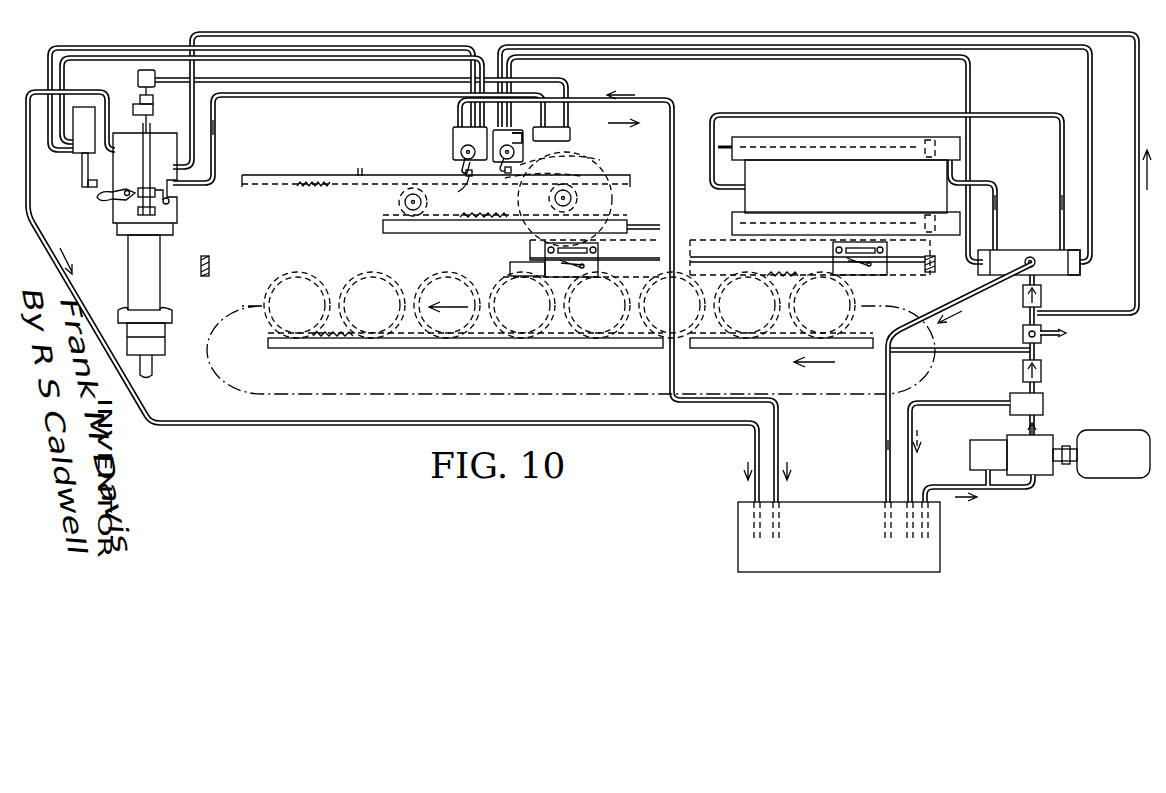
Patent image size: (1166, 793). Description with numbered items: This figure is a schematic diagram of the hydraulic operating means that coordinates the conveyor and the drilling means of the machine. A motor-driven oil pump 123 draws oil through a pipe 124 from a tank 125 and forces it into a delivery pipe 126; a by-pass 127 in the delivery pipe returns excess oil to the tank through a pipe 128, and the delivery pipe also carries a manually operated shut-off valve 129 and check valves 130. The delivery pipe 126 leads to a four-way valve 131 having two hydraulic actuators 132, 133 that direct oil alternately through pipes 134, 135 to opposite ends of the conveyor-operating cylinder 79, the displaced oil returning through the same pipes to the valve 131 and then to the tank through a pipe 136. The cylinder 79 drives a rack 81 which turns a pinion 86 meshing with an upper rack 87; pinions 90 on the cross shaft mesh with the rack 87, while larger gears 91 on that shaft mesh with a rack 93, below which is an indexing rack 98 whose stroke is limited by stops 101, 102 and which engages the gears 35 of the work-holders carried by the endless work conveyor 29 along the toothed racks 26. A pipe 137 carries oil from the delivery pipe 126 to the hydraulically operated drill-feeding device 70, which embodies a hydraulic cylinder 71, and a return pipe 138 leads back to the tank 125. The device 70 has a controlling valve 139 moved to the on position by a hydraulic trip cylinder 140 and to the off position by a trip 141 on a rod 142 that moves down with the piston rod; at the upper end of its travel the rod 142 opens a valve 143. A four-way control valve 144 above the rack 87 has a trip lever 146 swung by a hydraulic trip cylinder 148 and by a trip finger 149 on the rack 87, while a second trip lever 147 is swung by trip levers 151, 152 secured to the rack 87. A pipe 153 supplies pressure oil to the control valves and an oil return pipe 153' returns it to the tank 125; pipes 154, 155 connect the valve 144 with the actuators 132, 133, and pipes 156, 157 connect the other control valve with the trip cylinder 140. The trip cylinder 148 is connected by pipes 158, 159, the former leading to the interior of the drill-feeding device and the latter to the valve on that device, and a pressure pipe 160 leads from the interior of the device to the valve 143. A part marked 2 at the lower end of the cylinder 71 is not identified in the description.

The stem 2 is at (155, 366).
The toothed racks 26 is at (407, 346).
The endless work conveyor 29 is at (318, 270).
The gears 35 is at (283, 278).
The drill-feeding device 70 is at (115, 226).
The hydraulic cylinder 71 is at (128, 272).
The double-acting hydraulic cylinder 79 is at (862, 152).
The rack 81 is at (425, 234).
The pinion 86 is at (400, 203).
The upper horizontal rack 87 is at (280, 176).
The pinions 90 is at (578, 201).
The gears 91 is at (612, 178).
The racks 93 is at (530, 248).
The indexing rack 98 is at (510, 268).
The stop 101 is at (936, 268).
The stop 102 is at (206, 278).
The motor-driven oil pump 123 is at (1040, 480).
The pipe 124 is at (996, 490).
The tank 125 is at (940, 552).
The delivery pipe 126 is at (1070, 426).
The by-pass 127 is at (1045, 404).
The pipe 128 is at (919, 464).
The manually operated shut-off valve 129 is at (1068, 334).
The check valves 130 is at (1042, 296).
The four-way valve 131 is at (1048, 252).
The hydraulic actuator 132 is at (985, 275).
The hydraulic actuator 133 is at (1078, 277).
The pipe 134 is at (988, 184).
The pipe 135 is at (1062, 200).
The pipe 136 is at (882, 443).
The pipe 137 is at (1122, 317).
The return pipe 138 is at (292, 430).
The controlling valve 139 is at (112, 206).
The hydraulic trip cylinder 140 is at (82, 152).
The trip 141 is at (140, 107).
The rod 142 is at (148, 168).
The valve 143 is at (138, 77).
The four-way control valve 144 is at (525, 148).
The trip lever 146 is at (455, 140).
The trip lever 147 is at (458, 168).
The hydraulic trip cylinder 148 is at (570, 133).
The trip finger 149 is at (548, 176).
The trip lever 151 is at (356, 170).
The trip lever 152 is at (436, 209).
The pipe 153 is at (618, 285).
The oil return pipe 153' is at (785, 450).
The pipe 154 is at (840, 58).
The pipe 155 is at (1020, 52).
The pipe 156 is at (322, 78).
The pipe 157 is at (152, 48).
The pipe 158 is at (350, 96).
The pipe 159 is at (392, 78).
The pressure pipe 160 is at (215, 126).